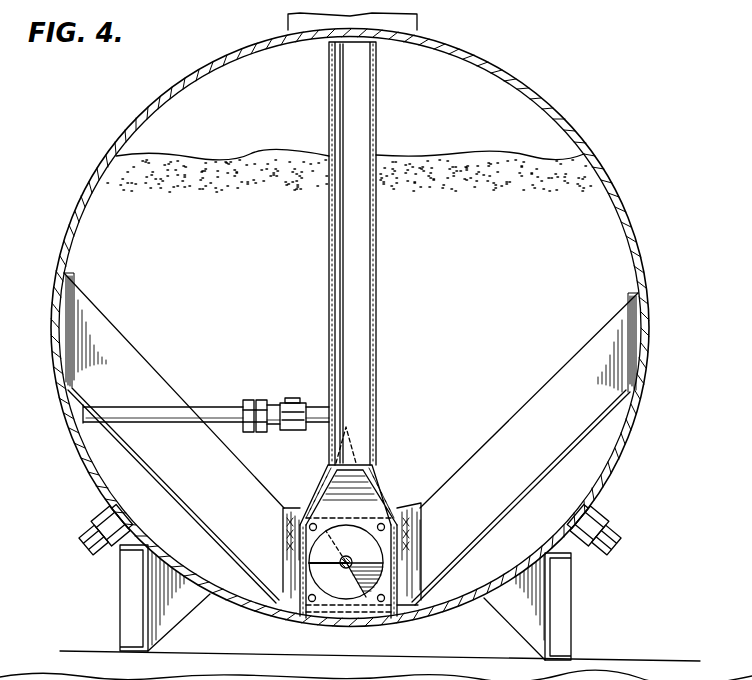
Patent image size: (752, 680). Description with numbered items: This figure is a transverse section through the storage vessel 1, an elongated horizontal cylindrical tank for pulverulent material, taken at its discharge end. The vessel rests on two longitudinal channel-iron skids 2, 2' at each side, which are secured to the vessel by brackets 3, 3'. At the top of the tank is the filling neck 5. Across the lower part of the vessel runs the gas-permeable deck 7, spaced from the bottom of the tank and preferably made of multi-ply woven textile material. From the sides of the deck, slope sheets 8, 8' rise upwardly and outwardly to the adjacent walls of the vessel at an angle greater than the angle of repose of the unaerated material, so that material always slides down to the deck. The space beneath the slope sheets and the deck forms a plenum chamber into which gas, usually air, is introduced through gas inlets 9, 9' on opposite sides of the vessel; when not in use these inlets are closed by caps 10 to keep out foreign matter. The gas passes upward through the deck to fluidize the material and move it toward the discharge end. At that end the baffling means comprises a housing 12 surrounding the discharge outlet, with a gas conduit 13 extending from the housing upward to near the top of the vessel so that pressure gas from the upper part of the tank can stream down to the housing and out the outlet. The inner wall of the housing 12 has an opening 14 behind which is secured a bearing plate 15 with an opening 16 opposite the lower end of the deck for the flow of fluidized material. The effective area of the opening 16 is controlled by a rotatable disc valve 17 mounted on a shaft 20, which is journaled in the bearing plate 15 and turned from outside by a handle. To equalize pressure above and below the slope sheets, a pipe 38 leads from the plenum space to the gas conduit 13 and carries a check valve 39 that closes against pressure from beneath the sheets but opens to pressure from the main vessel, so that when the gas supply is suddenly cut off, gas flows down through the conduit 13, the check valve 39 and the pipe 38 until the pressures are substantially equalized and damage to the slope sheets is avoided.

The storage vessel 1 is at (579, 141).
The skid 2 is at (132, 598).
The skid 2' is at (561, 607).
The bracket 3 is at (179, 623).
The bracket 3' is at (513, 629).
The filling neck 5 is at (417, 26).
The gas-permeable deck 7 is at (427, 592).
The slope sheet 8 is at (174, 438).
The slope sheet 8' is at (525, 449).
The gas inlet 9 is at (90, 511).
The gas inlet 9' is at (600, 515).
The cap 10 is at (92, 533).
The housing 12 is at (374, 503).
The gas conduit 13 is at (377, 333).
The opening 14 is at (365, 532).
The bearing plate 15 is at (326, 545).
The opening 16 is at (311, 573).
The disc valve 17 is at (364, 580).
The shaft 20 is at (347, 556).
The pipe 38 is at (314, 410).
The check valve 39 is at (287, 413).